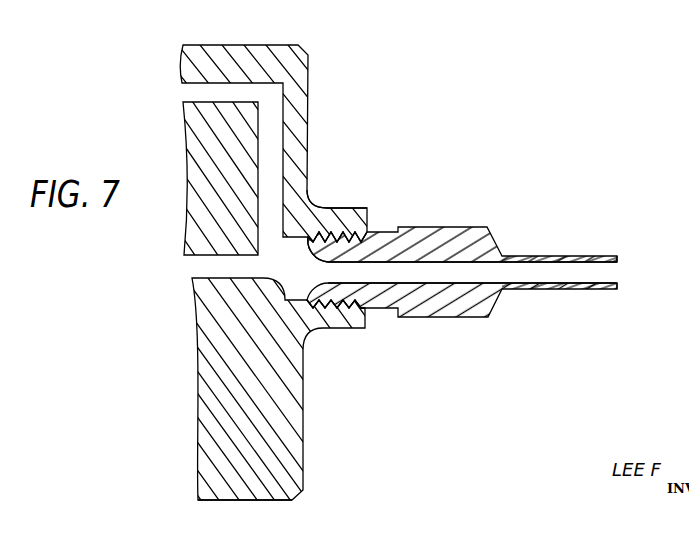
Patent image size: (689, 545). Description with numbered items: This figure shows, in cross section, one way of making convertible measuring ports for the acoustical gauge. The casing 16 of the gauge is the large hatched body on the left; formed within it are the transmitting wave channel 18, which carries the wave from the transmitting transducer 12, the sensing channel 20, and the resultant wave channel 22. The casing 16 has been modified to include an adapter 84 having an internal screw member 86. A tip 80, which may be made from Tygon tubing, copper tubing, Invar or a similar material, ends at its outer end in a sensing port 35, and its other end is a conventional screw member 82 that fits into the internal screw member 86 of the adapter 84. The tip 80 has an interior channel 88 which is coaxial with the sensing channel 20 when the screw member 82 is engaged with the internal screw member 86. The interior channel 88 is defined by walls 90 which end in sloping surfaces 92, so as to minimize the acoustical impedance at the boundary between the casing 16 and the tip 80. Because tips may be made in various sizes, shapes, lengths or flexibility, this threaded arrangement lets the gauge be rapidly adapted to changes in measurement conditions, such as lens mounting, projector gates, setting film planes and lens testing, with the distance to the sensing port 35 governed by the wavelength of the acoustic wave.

The transmitting transducer 12 is at (307, 333).
The casing 16 is at (252, 495).
The transmitting wave channel 18 is at (234, 92).
The sensing channel 20 is at (296, 242).
The resultant wave channel 22 is at (212, 265).
The sensing port 35 is at (607, 277).
The tip 80 is at (462, 254).
The screw member 82 is at (365, 233).
The adapter 84 is at (357, 222).
The internal screw member 86 is at (327, 257).
The interior channel 88 is at (470, 270).
The walls 90 is at (437, 283).
The sloping surfaces 92 is at (326, 284).